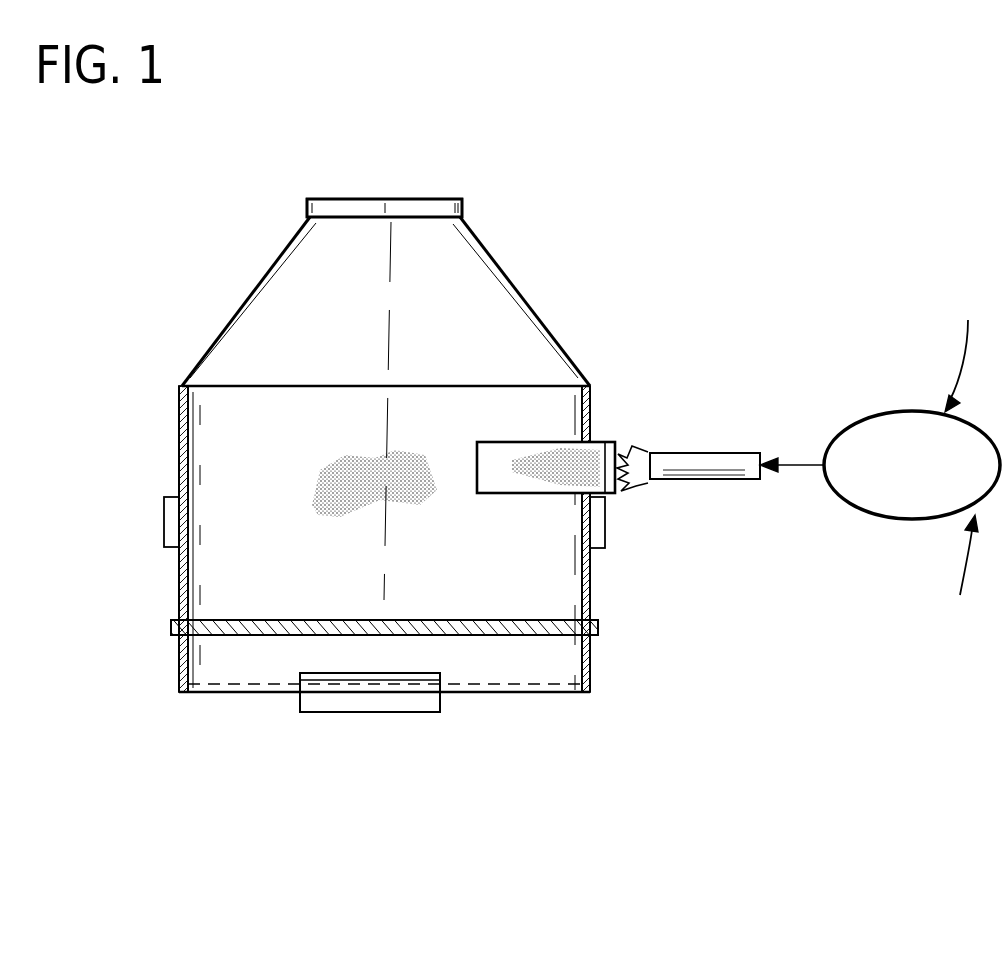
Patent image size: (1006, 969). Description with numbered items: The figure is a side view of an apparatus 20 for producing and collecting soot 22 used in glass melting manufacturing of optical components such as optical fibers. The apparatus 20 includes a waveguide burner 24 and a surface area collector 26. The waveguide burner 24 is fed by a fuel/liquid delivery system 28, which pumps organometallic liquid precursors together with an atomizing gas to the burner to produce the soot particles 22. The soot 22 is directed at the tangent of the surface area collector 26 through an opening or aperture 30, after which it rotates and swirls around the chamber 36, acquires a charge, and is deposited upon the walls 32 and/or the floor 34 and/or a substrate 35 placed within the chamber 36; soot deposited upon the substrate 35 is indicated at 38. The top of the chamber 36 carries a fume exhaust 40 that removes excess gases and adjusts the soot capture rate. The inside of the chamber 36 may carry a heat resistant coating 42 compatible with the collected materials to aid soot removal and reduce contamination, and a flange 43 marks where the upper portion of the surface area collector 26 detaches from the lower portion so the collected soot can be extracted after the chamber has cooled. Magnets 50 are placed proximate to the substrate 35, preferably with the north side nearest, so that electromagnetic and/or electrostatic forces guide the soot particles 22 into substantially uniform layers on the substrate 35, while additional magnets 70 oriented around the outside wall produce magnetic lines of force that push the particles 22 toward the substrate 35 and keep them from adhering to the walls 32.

The apparatus 20 is at (232, 228).
The soot 22 is at (333, 458).
The waveguide burner 24 is at (703, 465).
The surface area collector 26 is at (181, 386).
The fuel/liquid delivery system 28 is at (884, 412).
The opening or aperture 30 is at (590, 447).
The walls 32 is at (590, 603).
The floor 34 is at (490, 693).
The substrate 35 is at (300, 690).
The chamber 36 is at (240, 548).
The deposited soot 38 is at (300, 678).
The fume exhaust 40 is at (423, 199).
The heat resistant coating 42 is at (588, 573).
The flange 43 is at (171, 630).
The magnets 50 is at (360, 705).
The additional magnets 70 is at (164, 515).